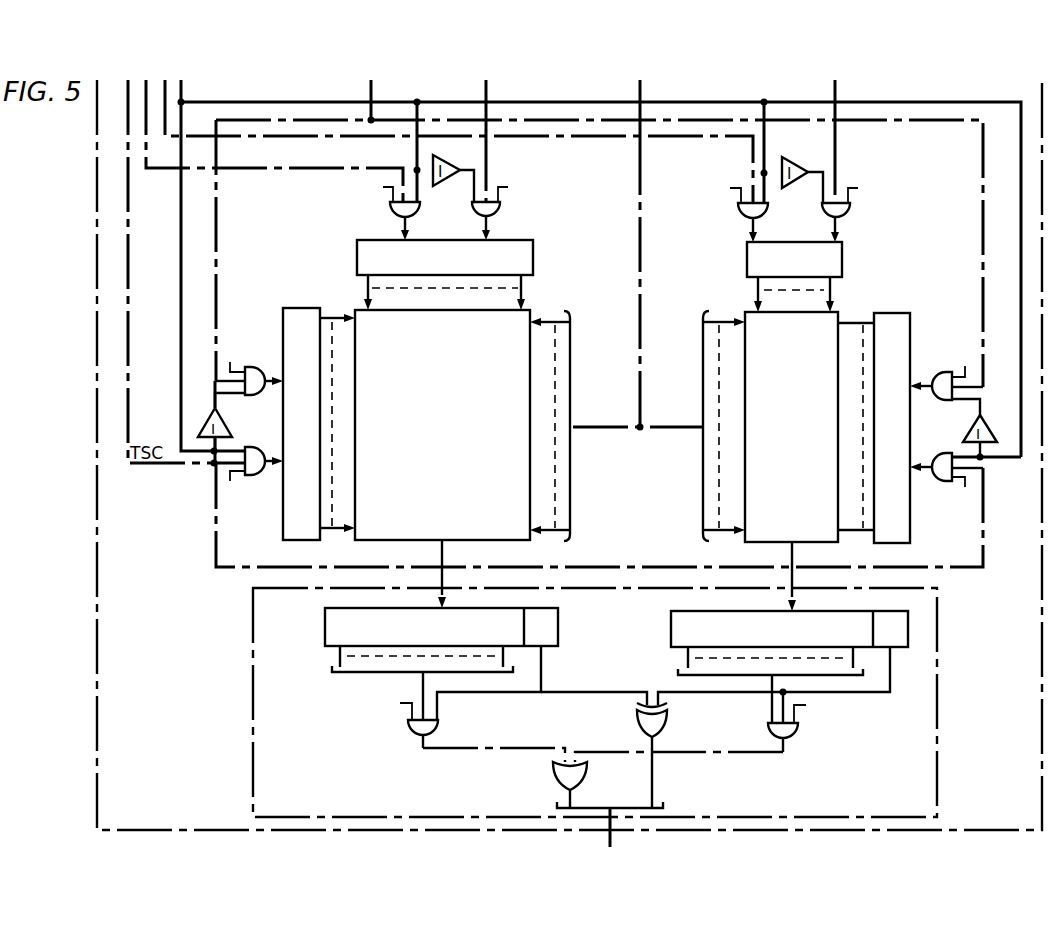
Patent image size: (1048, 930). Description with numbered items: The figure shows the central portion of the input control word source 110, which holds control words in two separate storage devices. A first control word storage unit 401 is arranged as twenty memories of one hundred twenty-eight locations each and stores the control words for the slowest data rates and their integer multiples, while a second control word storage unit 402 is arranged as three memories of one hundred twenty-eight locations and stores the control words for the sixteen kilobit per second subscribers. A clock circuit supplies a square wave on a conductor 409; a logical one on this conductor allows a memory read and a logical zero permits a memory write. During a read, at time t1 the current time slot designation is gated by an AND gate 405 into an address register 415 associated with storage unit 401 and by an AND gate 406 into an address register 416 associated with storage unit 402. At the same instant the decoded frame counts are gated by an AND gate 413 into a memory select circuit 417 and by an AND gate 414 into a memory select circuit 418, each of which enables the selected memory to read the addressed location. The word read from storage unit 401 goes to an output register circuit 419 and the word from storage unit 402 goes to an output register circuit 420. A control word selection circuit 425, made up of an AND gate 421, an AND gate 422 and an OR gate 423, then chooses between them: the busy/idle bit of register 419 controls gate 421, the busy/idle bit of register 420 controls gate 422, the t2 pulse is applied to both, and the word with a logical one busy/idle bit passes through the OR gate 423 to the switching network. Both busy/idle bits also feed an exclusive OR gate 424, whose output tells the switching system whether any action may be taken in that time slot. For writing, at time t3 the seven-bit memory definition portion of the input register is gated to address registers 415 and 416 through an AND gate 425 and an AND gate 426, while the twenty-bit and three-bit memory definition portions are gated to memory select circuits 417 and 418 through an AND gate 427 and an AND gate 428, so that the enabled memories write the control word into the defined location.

The input control word source 110 is at (97, 470).
The conductor 409 is at (180, 262).
The AND gate 413 is at (390, 207).
The AND gate 414 is at (741, 212).
The address register 415 is at (304, 308).
The address register 416 is at (890, 313).
The memory select circuit 417 is at (370, 240).
The memory select circuit 418 is at (747, 259).
The control word storage unit 401 is at (518, 541).
The control word storage unit 402 is at (760, 542).
The AND gate 405 is at (258, 447).
The AND gate 406 is at (943, 453).
The AND gate 425 is at (257, 366).
The AND gate 426 is at (943, 371).
The AND gate 427 is at (501, 210).
The AND gate 428 is at (851, 212).
The output register circuit 419 is at (325, 628).
The output register circuit 420 is at (671, 630).
The AND gate 421 is at (440, 725).
The AND gate 422 is at (800, 733).
The OR gate 423 is at (553, 775).
The exclusive OR gate 424 is at (668, 724).